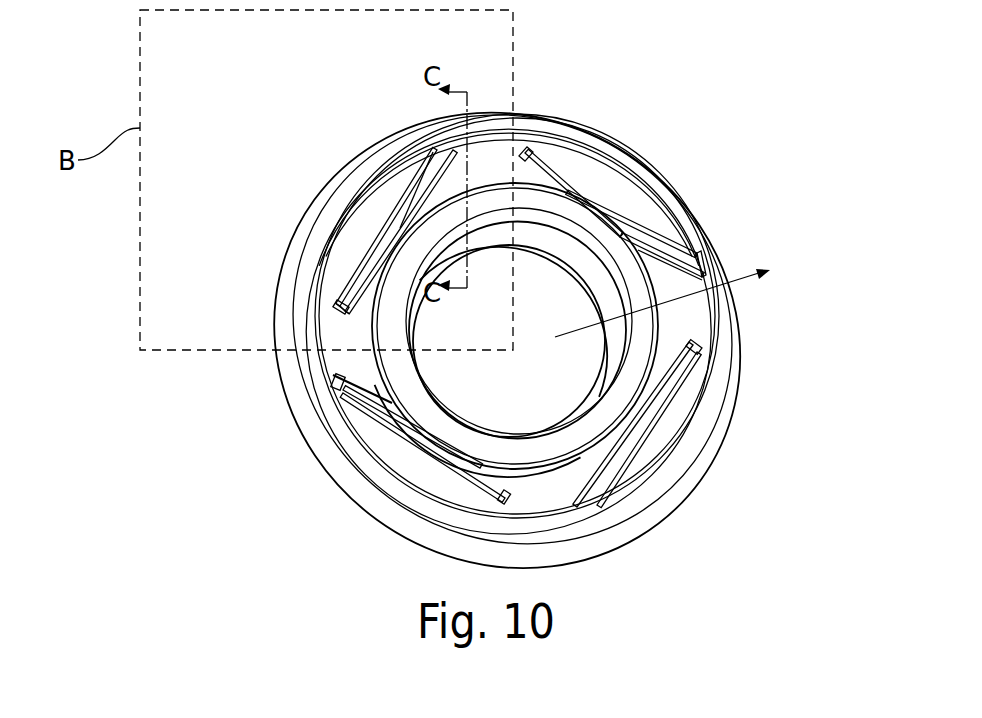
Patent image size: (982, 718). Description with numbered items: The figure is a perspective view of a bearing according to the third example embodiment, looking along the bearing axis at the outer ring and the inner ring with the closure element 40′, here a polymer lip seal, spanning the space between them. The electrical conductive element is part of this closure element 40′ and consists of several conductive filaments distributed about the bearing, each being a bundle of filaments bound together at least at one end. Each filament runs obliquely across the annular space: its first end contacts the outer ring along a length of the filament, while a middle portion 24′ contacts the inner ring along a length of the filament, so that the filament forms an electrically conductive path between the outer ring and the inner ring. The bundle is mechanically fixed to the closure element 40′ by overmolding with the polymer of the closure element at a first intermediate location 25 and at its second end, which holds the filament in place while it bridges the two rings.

The middle portion 24′ is at (382, 243).
The first intermediate location 25 is at (423, 182).
The closure element 40′ is at (553, 500).